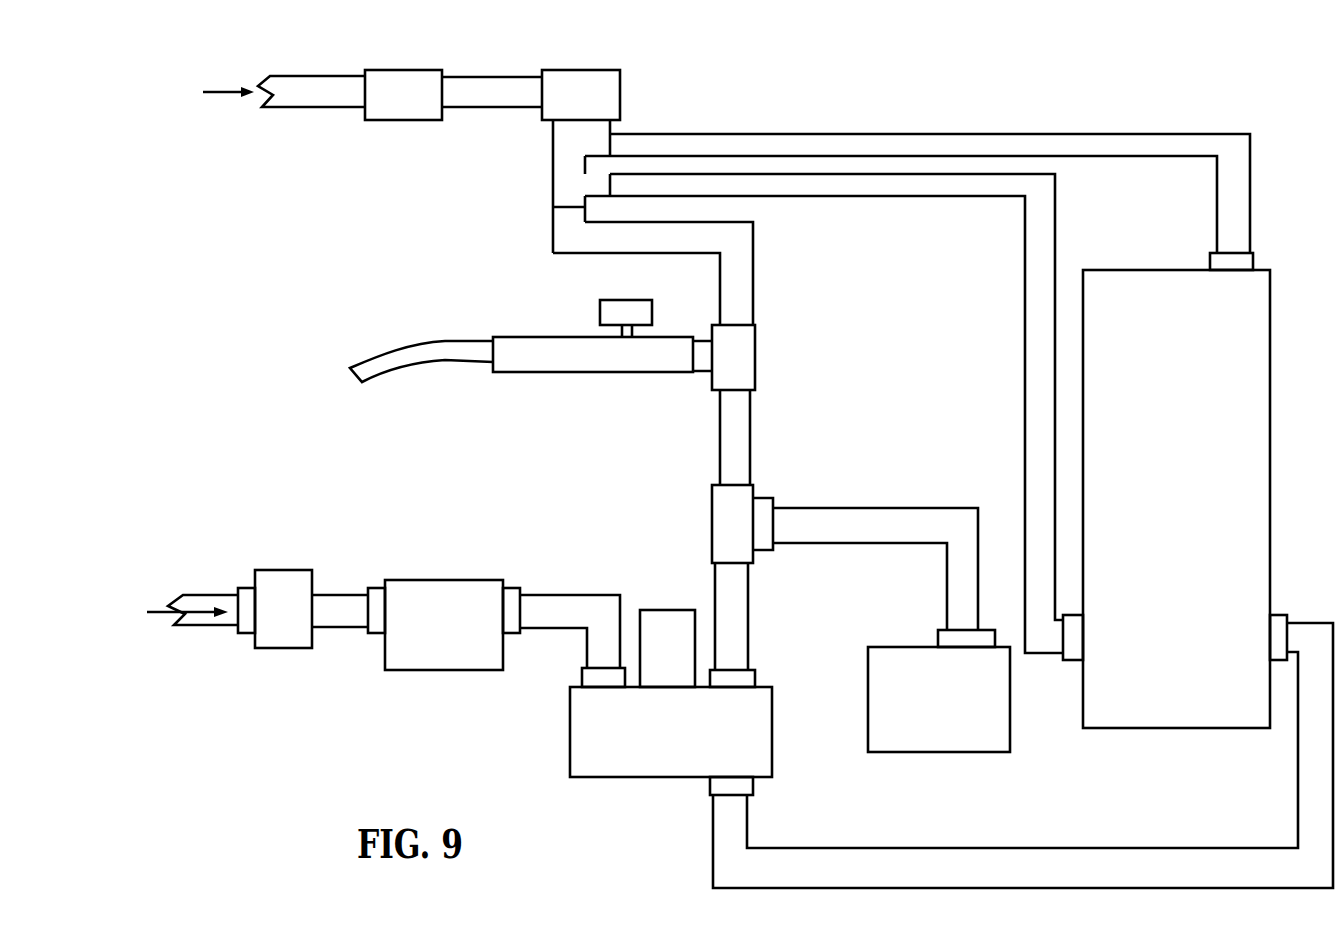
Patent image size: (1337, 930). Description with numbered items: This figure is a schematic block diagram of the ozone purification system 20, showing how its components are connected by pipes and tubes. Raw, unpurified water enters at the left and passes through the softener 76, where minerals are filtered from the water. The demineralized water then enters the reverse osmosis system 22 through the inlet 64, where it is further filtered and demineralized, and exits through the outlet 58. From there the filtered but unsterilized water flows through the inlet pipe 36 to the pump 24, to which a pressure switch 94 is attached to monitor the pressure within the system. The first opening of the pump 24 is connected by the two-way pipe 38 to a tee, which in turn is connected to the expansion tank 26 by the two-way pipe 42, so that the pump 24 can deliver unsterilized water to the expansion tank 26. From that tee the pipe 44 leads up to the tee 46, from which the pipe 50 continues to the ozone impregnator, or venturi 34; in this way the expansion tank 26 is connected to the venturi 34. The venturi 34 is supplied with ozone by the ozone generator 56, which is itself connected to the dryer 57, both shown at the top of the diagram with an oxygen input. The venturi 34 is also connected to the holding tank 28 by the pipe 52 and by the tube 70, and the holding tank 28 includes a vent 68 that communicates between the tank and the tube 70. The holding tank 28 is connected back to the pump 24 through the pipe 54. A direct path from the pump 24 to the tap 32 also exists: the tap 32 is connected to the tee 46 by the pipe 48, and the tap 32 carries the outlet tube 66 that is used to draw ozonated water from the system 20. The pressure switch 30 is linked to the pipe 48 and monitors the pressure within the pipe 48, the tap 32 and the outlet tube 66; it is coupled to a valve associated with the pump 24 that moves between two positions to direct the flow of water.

The ozone purification system 20 is at (345, 274).
The reverse osmosis system 22 is at (447, 670).
The pump 24 is at (655, 777).
The expansion tank 26 is at (900, 647).
The holding tank 28 is at (1270, 318).
The pressure switch 30 is at (602, 312).
The tap 32 is at (490, 372).
The ozone impregnator/venturi 34 is at (553, 187).
The inlet pipe 36 is at (583, 648).
The two-way pipe 38 is at (750, 645).
The two-way pipe 42 is at (947, 585).
The pipe 44 is at (748, 413).
The tee 46 is at (755, 366).
The pipe 48 is at (658, 372).
The pipe 50 is at (753, 272).
The pipe 52 is at (1025, 290).
The pipe 54 is at (1297, 818).
The ozone generator 56 is at (613, 107).
The dryer 57 is at (395, 108).
The outlet 58 is at (521, 594).
The inlet 64 is at (377, 595).
The outlet tube 66 is at (405, 345).
The vent 68 is at (1253, 260).
The tube 70 is at (1172, 134).
The softener 76 is at (280, 583).
The pressure switch 94 is at (671, 630).